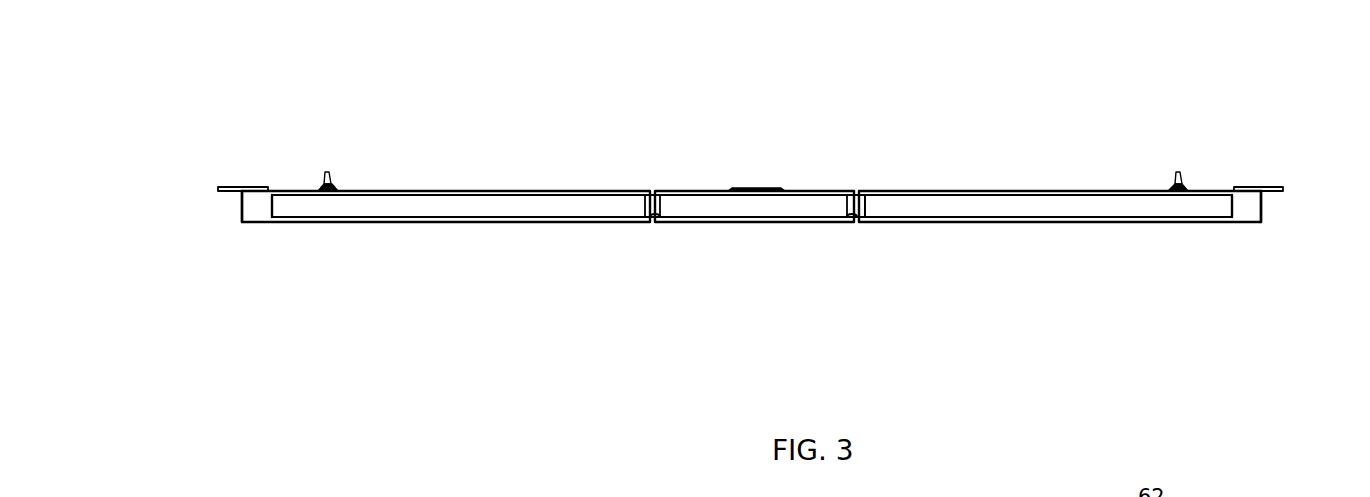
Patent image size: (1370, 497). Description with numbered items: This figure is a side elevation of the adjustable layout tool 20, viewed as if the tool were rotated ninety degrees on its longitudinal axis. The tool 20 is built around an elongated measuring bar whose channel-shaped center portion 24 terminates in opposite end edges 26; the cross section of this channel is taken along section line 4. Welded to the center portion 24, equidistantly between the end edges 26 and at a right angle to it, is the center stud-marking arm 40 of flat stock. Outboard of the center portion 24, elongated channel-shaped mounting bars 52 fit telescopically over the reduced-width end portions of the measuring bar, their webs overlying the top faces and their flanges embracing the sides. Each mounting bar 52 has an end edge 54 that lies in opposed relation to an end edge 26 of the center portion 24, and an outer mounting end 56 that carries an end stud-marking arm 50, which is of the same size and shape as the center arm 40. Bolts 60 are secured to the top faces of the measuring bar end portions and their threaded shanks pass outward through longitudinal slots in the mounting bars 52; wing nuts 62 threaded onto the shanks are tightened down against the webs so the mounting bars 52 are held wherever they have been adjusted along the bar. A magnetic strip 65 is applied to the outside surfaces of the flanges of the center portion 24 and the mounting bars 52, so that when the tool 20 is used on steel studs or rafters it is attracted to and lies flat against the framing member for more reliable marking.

The adjustable layout tool 20 is at (997, 92).
The center portion 24 is at (766, 226).
The end edges 26 is at (632, 197).
The center stud-marking arm 40 is at (772, 188).
The end stud-marking arms 50 is at (257, 187).
The mounting bars 52 is at (430, 224).
The end edges 54 is at (667, 222).
The outer mounting ends 56 is at (243, 210).
The bolts 60 is at (330, 187).
The wing nuts 62 is at (328, 183).
The magnetic strip 65 is at (1053, 212).
The section line 4- 4 is at (811, 178).